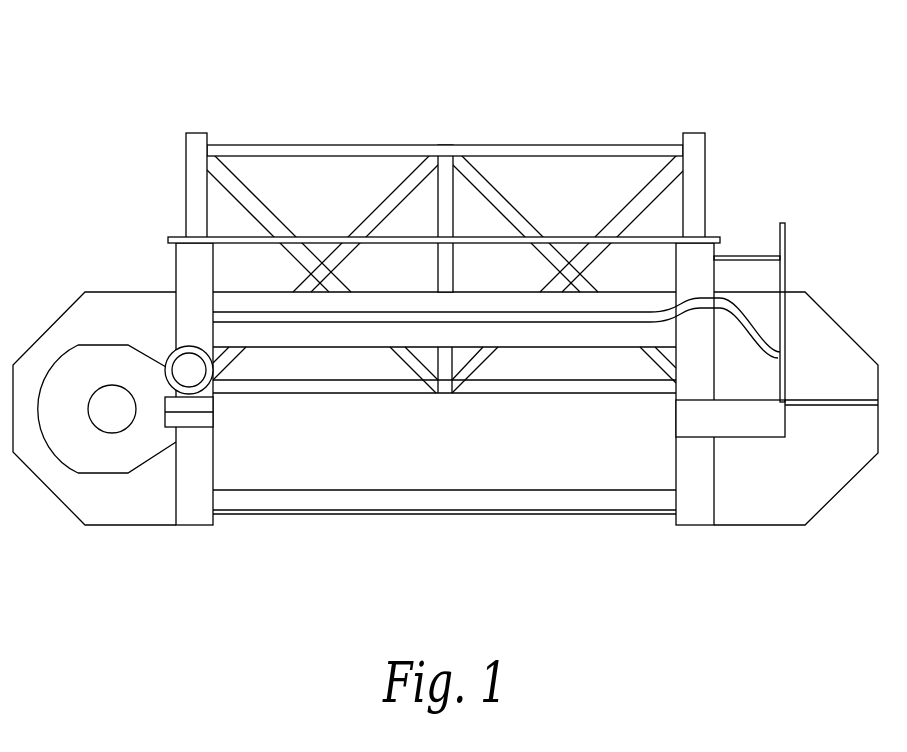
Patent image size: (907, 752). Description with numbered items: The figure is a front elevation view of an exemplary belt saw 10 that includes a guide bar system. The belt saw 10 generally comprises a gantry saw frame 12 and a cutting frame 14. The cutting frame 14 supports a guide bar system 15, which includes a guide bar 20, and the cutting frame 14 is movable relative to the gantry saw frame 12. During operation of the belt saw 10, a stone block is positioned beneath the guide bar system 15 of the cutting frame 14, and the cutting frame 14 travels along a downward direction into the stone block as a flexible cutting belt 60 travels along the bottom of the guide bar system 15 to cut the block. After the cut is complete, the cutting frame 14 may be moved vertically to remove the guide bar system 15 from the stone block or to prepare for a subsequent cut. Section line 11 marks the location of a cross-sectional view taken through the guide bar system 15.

The belt saw 10 is at (445, 327).
The section line 11- 11 is at (448, 473).
The gantry saw frame 12 is at (712, 179).
The cutting frame 14 is at (728, 248).
The guide bar system 15 is at (589, 538).
The guide bar 20 is at (377, 502).
The flexible cutting belt 60 is at (468, 514).